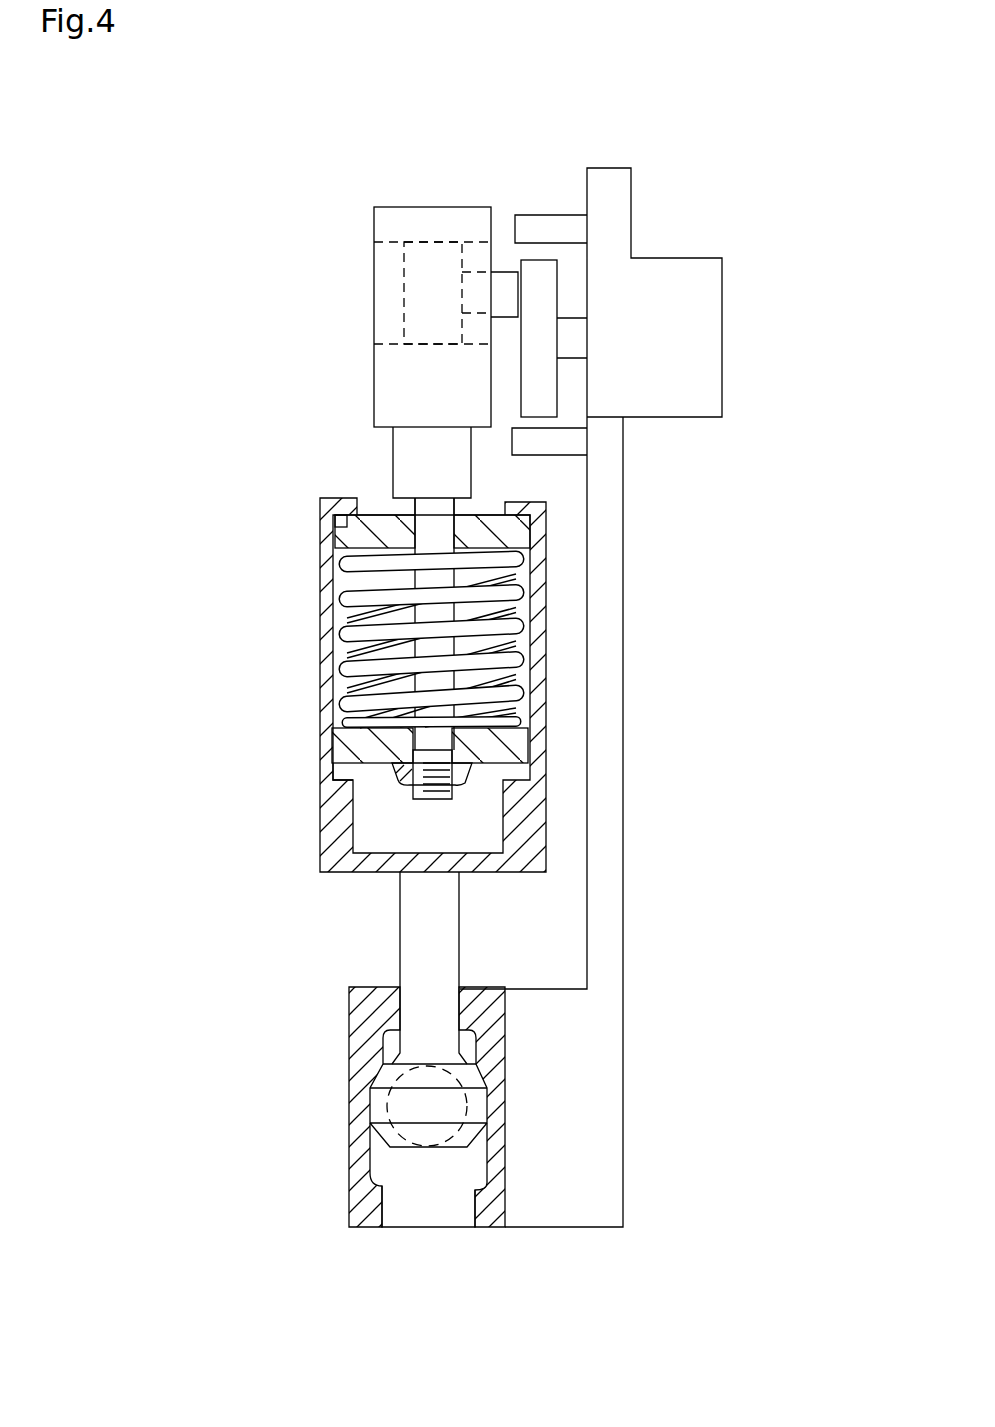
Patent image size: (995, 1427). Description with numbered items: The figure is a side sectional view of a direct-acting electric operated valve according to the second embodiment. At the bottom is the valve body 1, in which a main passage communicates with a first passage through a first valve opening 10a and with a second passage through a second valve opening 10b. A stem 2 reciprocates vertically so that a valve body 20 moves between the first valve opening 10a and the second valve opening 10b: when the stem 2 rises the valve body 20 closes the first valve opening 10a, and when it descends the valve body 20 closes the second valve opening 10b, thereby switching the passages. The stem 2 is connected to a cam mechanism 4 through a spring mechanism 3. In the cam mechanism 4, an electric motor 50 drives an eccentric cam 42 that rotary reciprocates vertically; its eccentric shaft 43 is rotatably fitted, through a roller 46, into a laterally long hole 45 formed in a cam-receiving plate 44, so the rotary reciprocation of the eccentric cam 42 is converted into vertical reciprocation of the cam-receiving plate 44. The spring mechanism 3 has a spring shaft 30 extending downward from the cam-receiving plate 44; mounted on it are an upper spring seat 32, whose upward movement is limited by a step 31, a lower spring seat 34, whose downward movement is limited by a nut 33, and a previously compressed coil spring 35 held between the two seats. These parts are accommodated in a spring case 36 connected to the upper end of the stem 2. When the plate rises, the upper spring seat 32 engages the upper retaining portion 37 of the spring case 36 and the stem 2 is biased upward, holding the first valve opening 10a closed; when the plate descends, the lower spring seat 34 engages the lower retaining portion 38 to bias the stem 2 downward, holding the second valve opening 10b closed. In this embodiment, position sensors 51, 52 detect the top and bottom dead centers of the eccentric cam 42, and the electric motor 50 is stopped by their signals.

The valve body 1 is at (368, 1118).
The stem 2 is at (403, 954).
The spring mechanism 3 is at (463, 685).
The cam mechanism 4 is at (404, 300).
The first valve opening 10a is at (380, 1087).
The second valve opening 10b is at (378, 1187).
The valve body 20 is at (373, 1115).
The spring shaft 30 is at (415, 600).
The step 31 is at (402, 507).
The upper spring seat 32 is at (502, 537).
The nut 33 is at (470, 772).
The lower spring seat 34 is at (495, 740).
The coil spring 35 is at (503, 620).
The spring case 36 is at (327, 803).
The upper retaining portion 37 is at (345, 520).
The lower retaining portion 38 is at (333, 760).
The eccentric cam (rotor) 42 is at (558, 371).
The eccentric shaft 43 is at (500, 278).
The cam-receiving plate 44 is at (390, 397).
The laterally long hole 45 is at (388, 250).
The roller 46 is at (402, 282).
The electric motor 50 is at (591, 679).
The position sensor 51 is at (543, 228).
The position sensor 52 is at (558, 440).